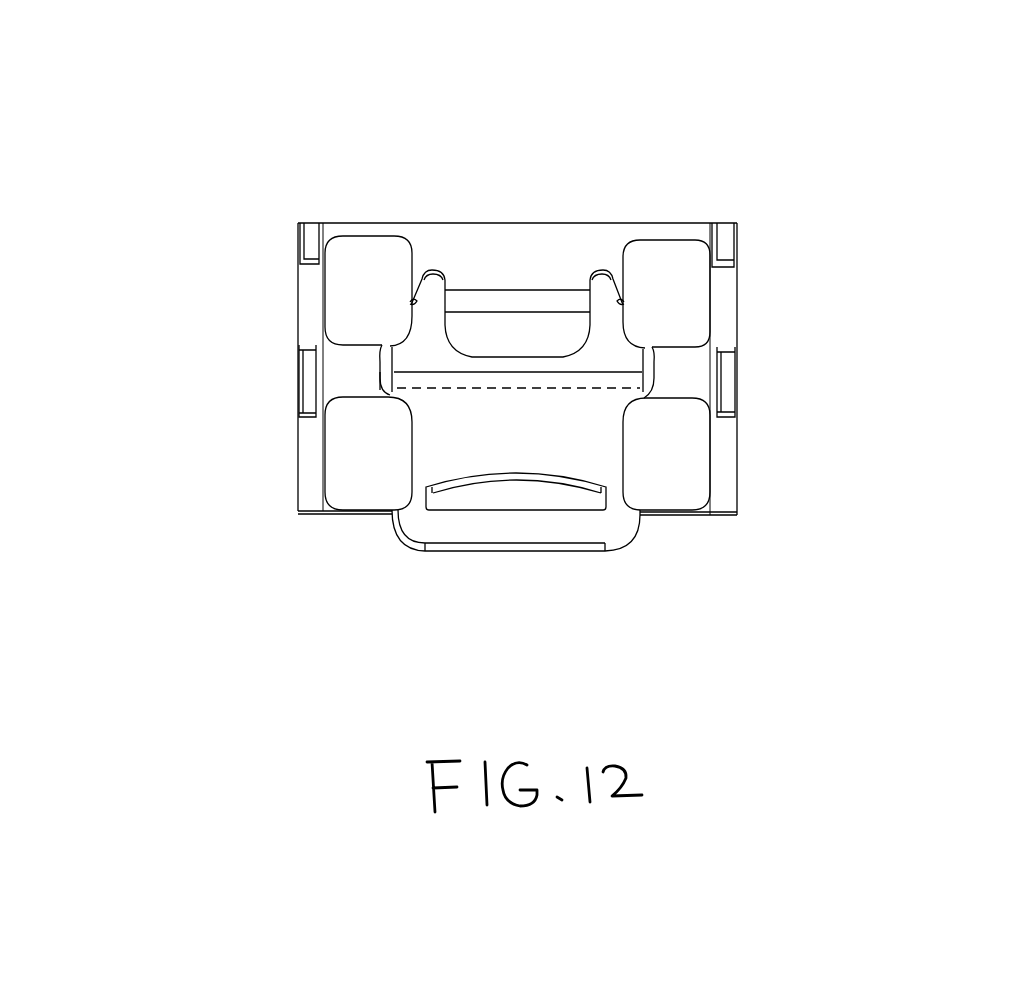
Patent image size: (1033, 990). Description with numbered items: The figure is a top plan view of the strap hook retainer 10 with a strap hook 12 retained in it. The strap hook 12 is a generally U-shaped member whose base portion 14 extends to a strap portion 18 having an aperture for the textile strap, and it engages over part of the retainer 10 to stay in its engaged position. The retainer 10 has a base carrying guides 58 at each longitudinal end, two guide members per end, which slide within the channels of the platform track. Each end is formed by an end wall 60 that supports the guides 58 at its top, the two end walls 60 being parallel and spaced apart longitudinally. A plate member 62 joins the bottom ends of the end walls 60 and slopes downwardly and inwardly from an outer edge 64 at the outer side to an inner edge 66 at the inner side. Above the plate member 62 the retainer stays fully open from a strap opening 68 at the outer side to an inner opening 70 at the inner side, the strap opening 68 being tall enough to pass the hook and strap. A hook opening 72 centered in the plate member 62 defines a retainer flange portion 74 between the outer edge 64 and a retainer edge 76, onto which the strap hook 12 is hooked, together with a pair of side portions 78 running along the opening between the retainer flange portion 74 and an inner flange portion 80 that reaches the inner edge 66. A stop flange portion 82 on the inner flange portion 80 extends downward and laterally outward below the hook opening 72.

The strap hook retainer 10 is at (236, 360).
The strap hook 12 is at (392, 546).
The base portion 14 is at (617, 377).
The strap portion 18 is at (615, 533).
The guides 58 is at (367, 277).
The end wall 60 is at (300, 383).
The plate member 62 is at (542, 258).
The outer edge 64 is at (713, 517).
The inner edge 66 is at (715, 220).
The strap opening 68 is at (331, 520).
The inner opening 70 is at (453, 236).
The hook opening 72 is at (612, 346).
The retainer flange portion 74 is at (360, 382).
The retainer edge 76 is at (480, 390).
The side portions 78 is at (380, 353).
The inner flange portion 80 is at (573, 253).
The stop flange portion 82 is at (467, 327).